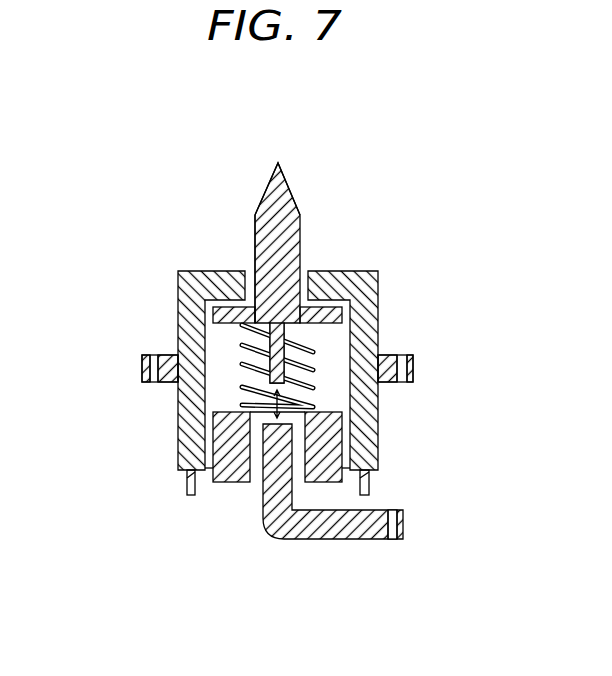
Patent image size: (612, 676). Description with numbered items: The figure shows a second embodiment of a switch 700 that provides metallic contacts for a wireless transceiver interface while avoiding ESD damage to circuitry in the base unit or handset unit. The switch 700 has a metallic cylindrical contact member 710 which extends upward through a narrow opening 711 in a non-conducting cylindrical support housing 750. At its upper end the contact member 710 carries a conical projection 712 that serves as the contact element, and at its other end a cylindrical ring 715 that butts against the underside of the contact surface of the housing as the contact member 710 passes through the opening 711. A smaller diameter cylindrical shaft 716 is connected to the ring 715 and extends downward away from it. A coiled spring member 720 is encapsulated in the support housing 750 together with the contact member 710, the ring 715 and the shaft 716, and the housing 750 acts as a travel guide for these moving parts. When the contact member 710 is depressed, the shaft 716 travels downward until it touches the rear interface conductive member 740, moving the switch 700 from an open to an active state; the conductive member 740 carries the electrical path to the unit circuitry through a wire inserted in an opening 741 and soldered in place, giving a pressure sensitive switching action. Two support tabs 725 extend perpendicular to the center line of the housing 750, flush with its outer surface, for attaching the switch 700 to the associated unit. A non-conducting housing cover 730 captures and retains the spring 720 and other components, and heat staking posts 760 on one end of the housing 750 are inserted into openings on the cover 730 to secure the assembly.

The switch 700 is at (396, 85).
The metallic cylindrical contact member 710 is at (300, 245).
The narrow opening 711 is at (255, 270).
The conical projection 712 is at (285, 185).
The cylindrical ring 715 is at (342, 310).
The cylindrical shaft 716 is at (248, 324).
The coiled spring member 720 is at (313, 350).
The support tabs 725 is at (142, 353).
The housing cover 730 is at (330, 486).
The rear interface conductive member 740 is at (263, 533).
The opening 741 is at (390, 542).
The support housing 750 is at (358, 272).
The heat staking posts 760 is at (188, 496).